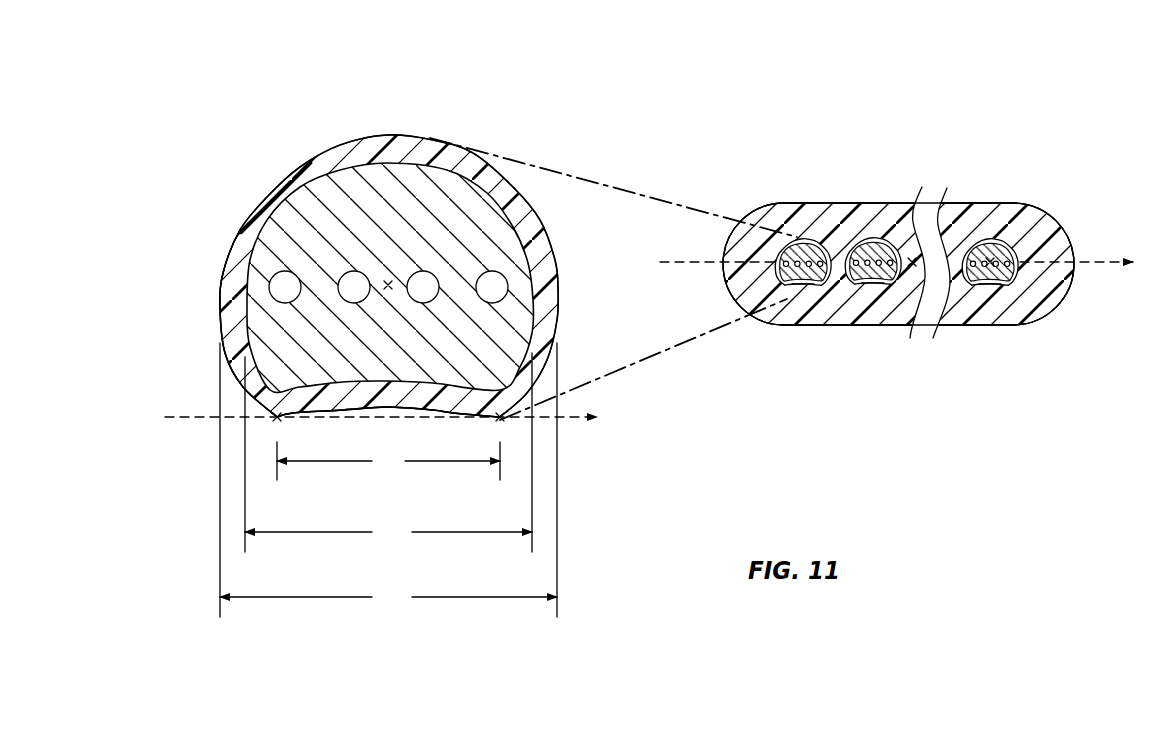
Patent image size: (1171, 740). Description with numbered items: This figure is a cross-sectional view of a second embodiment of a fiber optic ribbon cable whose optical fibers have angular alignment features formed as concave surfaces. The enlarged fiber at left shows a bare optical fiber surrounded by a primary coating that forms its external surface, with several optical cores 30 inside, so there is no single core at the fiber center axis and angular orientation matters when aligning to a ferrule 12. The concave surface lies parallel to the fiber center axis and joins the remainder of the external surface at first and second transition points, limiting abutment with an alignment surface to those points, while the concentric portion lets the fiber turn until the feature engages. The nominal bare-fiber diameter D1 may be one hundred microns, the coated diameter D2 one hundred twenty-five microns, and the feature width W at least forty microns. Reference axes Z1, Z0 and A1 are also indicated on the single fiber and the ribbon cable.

The ferrule 12 is at (748, 212).
The optical cores 30 is at (284, 292).
The ribbon axis A1 is at (912, 262).
The ribbon reference axis Z0 is at (912, 265).
The subunit reference axis Z1 is at (384, 417).
The width W is at (388, 462).
The nominal diameter D1 is at (388, 457).
The nominal diameter D2 is at (388, 483).